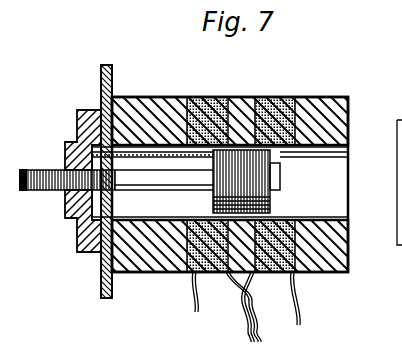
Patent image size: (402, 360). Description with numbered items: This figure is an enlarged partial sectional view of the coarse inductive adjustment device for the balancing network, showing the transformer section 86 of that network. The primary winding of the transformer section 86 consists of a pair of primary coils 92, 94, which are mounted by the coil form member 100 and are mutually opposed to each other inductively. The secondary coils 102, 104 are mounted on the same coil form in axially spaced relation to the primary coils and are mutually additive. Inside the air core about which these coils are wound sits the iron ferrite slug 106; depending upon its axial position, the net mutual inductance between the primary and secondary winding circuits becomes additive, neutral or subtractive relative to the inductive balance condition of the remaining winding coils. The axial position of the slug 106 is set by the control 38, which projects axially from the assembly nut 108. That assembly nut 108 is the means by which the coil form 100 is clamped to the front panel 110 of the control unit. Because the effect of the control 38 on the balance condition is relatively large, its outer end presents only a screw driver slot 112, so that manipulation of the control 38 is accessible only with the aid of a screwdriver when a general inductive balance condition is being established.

The control 38 is at (46, 166).
The transformer section 86 is at (314, 82).
The primary coil 92 is at (206, 97).
The primary coil 94 is at (190, 140).
The coil form member 100 is at (166, 237).
The secondary coil 102 is at (274, 97).
The secondary coil 104 is at (297, 228).
The iron ferrite slug 106 is at (255, 163).
The assembly nut 108 is at (73, 124).
The front panel 110 is at (105, 70).
The screw driver slot 112 is at (31, 193).